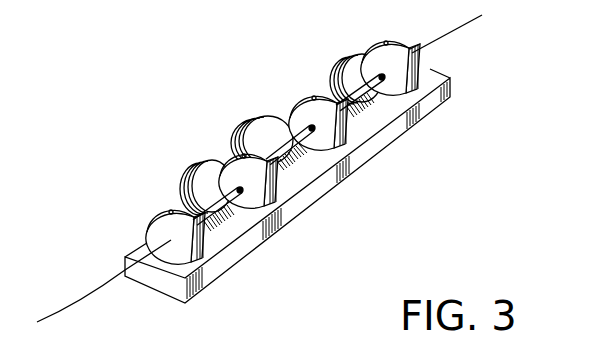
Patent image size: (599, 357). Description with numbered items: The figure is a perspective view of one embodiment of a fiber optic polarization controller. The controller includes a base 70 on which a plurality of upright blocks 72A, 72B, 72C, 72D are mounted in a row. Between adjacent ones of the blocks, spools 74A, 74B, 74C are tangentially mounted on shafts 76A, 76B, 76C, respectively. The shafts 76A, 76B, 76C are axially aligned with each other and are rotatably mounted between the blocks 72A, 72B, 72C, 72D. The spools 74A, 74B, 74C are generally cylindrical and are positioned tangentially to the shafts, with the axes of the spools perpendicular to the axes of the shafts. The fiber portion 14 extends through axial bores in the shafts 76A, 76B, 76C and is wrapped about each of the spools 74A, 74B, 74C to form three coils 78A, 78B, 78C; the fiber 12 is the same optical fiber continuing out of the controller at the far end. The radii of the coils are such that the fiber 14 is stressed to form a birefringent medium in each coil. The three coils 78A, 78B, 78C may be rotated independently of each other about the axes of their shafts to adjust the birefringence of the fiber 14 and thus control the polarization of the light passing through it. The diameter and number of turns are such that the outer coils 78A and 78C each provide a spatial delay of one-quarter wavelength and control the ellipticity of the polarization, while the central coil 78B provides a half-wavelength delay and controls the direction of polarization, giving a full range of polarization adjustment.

The optical fiber 12 is at (462, 28).
The fiber portion 14 is at (105, 288).
The base 70 is at (315, 189).
The upright block 72A is at (149, 229).
The upright block 72B is at (291, 198).
The upright block 72C is at (295, 108).
The upright block 72D is at (382, 40).
The spool 74A is at (210, 180).
The spool 74B is at (262, 128).
The spool 74C is at (363, 86).
The shaft 76A is at (244, 202).
The shaft 76B is at (288, 152).
The shaft 76C is at (381, 88).
The coil 78A is at (185, 184).
The coil 78B is at (240, 136).
The coil 78C is at (330, 82).